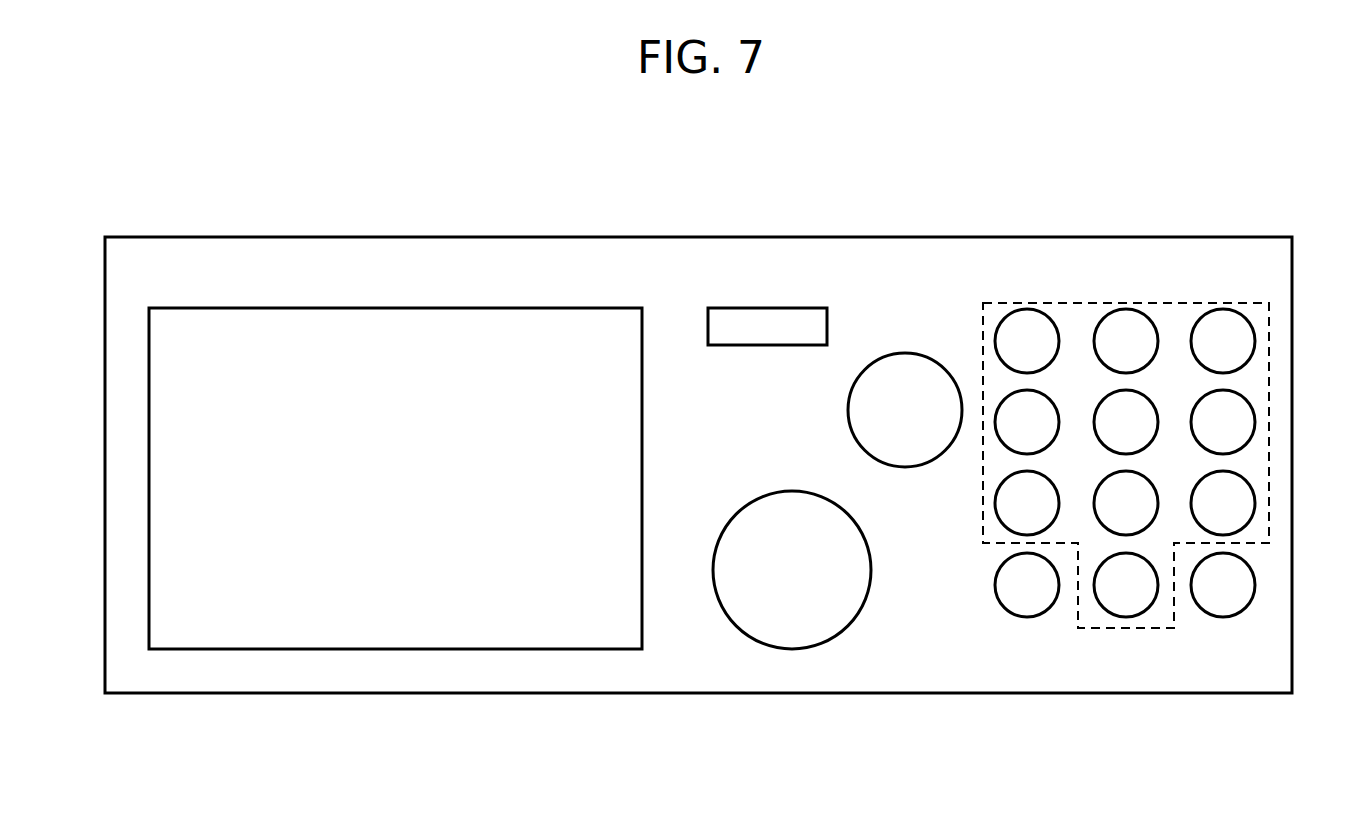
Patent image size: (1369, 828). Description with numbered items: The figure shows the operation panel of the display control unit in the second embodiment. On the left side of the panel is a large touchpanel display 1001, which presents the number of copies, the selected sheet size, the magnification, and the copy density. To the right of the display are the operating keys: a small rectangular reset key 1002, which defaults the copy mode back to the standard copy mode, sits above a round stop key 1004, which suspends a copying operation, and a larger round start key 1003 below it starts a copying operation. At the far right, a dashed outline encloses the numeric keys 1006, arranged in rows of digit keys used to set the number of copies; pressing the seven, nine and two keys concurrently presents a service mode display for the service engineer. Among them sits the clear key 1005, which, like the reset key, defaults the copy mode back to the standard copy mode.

The touchpanel display 1001 is at (212, 338).
The reset key 1002 is at (740, 323).
The start key 1003 is at (793, 632).
The stop key 1004 is at (895, 387).
The clear key 1005 is at (1027, 617).
The numeric keys 1006 is at (1147, 303).